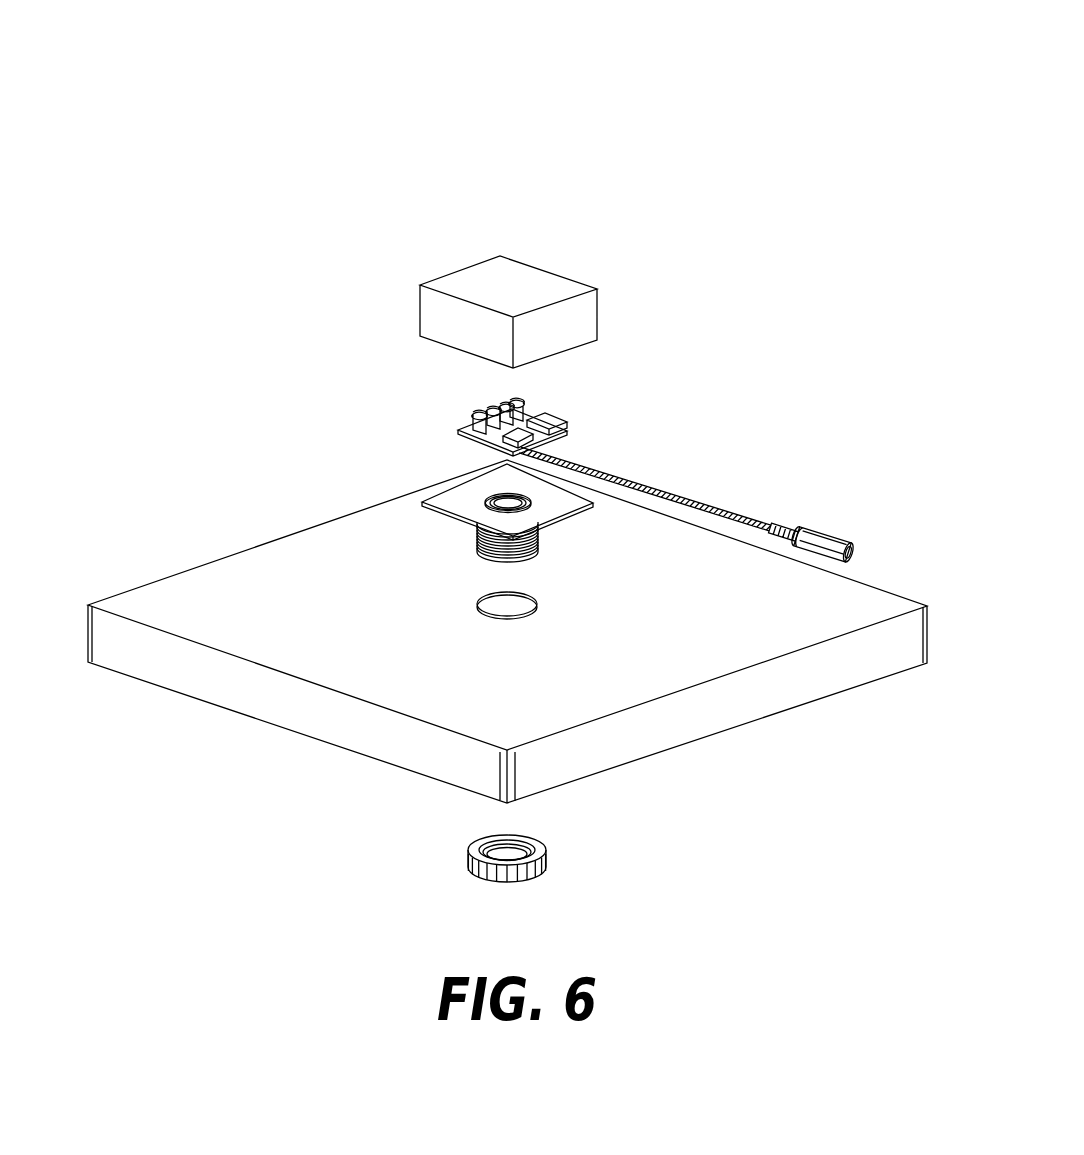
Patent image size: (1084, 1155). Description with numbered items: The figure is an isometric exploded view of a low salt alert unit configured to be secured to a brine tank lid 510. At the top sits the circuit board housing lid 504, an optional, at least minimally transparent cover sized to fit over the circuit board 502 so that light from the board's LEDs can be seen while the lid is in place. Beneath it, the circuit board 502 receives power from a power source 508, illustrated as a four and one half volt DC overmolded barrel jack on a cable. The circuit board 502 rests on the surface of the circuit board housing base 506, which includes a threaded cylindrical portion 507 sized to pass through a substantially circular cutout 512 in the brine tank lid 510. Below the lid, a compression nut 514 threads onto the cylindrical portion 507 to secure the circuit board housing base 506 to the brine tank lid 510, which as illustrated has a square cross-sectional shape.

The circuit board 502 is at (560, 424).
The circuit board housing lid 504 is at (583, 283).
The circuit board housing base 506 is at (449, 492).
The cylindrical portion 507 is at (480, 558).
The power source 508 is at (765, 528).
The brine tank lid 510 is at (304, 531).
The cutout 512 is at (540, 605).
The compression nut 514 is at (550, 861).